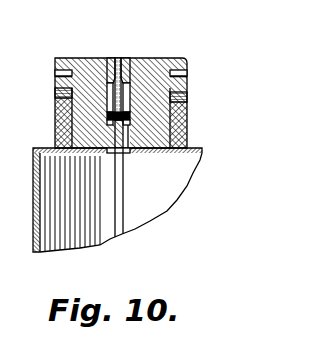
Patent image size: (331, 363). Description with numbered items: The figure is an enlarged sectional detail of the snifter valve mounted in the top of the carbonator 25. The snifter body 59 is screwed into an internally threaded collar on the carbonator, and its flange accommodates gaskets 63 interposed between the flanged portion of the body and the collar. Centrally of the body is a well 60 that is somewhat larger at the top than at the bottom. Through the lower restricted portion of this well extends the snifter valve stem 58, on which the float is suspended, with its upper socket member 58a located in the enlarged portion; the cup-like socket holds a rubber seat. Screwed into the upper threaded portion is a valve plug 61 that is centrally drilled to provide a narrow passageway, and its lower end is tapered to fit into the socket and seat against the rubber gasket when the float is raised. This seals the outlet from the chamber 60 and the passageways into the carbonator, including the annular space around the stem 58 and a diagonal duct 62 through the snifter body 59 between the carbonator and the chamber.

The casing 25 is at (33, 188).
The stem 58 is at (124, 202).
The socket member 58a is at (118, 117).
The snifter body 59 is at (150, 59).
The well 60 is at (128, 93).
The valve plug 61 is at (120, 59).
The diagonal duct 62 is at (131, 156).
The gaskets 63 is at (55, 95).